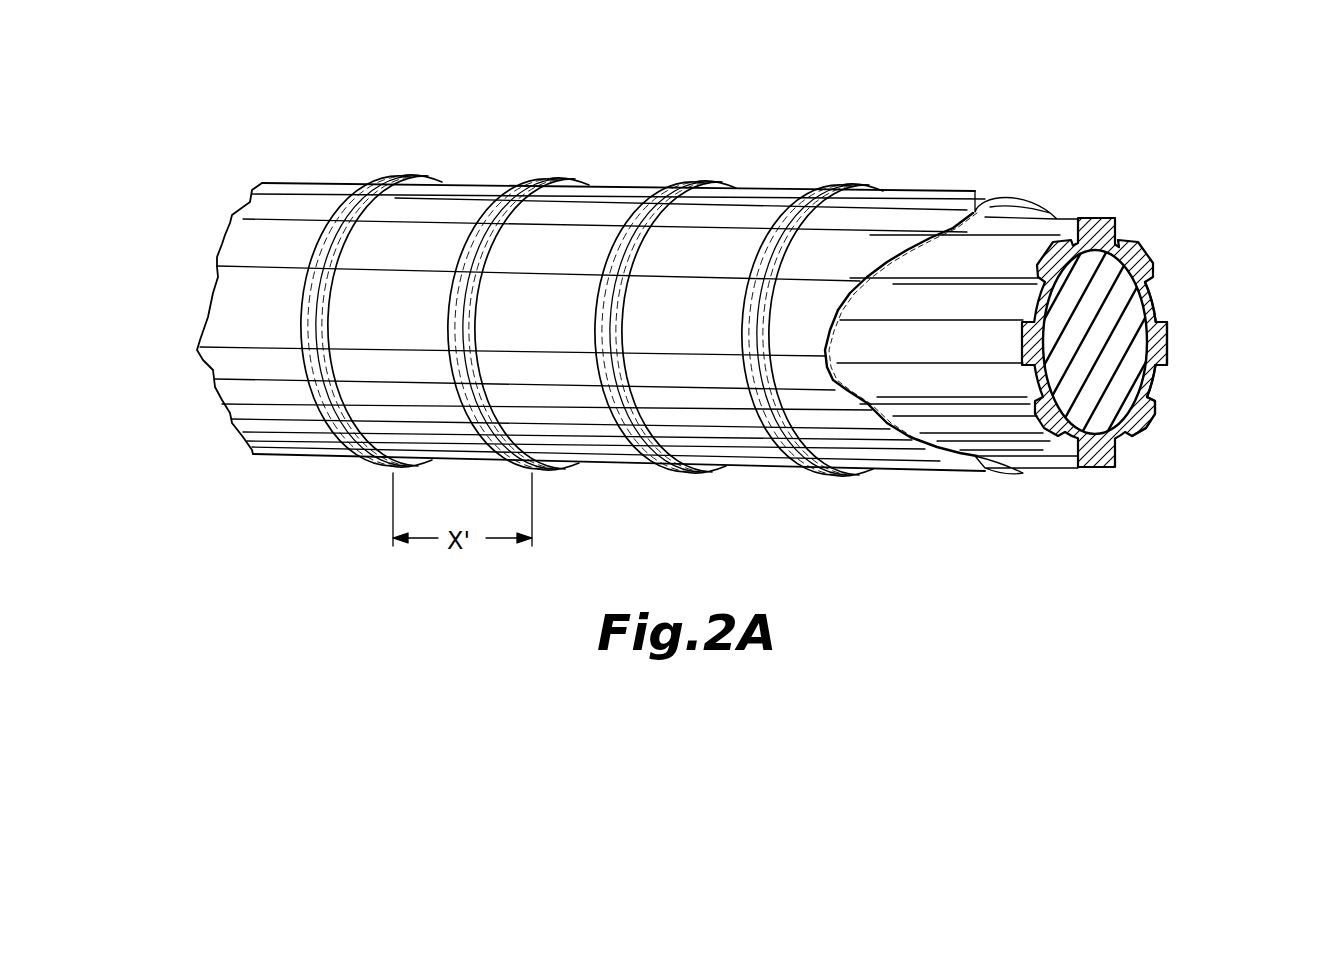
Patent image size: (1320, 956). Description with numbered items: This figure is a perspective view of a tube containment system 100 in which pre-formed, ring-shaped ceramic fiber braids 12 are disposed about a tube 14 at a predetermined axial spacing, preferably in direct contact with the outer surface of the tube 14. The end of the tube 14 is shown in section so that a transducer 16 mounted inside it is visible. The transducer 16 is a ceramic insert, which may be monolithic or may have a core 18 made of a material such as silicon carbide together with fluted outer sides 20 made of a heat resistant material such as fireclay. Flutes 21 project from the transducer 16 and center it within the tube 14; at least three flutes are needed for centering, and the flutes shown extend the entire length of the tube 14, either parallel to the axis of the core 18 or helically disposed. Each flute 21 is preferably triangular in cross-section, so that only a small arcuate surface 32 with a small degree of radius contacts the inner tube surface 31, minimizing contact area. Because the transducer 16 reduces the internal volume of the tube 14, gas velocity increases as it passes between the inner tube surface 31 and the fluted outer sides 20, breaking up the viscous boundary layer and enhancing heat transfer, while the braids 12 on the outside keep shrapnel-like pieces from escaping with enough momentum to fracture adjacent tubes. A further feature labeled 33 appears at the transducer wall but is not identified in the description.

The tube containment system 100 is at (228, 203).
The ceramic fiber braid 12 is at (398, 178).
The tube 14 is at (609, 186).
The inner tube surface 31 is at (1048, 218).
The transducer 16 is at (1142, 258).
The jacket wall 33 is at (1157, 304).
The flutes 21 is at (1168, 336).
The arcuate surface 32 is at (1166, 360).
The fluted outer sides 20 is at (1122, 382).
The core 18 is at (1148, 386).